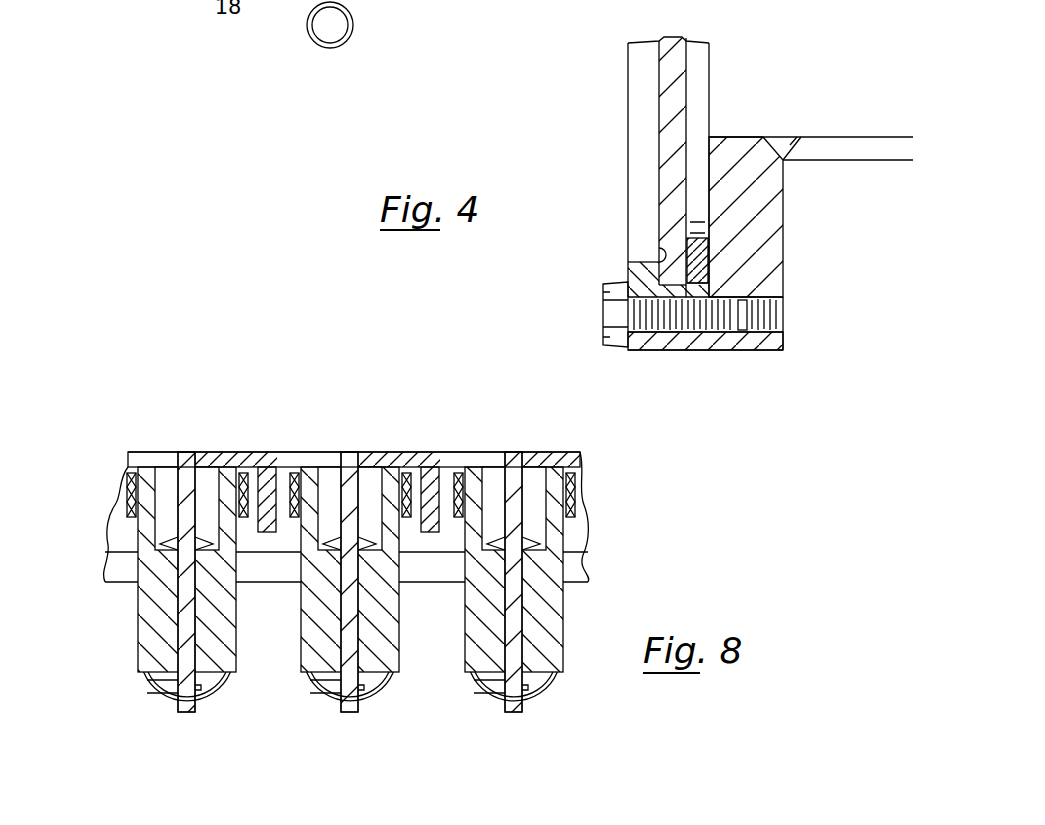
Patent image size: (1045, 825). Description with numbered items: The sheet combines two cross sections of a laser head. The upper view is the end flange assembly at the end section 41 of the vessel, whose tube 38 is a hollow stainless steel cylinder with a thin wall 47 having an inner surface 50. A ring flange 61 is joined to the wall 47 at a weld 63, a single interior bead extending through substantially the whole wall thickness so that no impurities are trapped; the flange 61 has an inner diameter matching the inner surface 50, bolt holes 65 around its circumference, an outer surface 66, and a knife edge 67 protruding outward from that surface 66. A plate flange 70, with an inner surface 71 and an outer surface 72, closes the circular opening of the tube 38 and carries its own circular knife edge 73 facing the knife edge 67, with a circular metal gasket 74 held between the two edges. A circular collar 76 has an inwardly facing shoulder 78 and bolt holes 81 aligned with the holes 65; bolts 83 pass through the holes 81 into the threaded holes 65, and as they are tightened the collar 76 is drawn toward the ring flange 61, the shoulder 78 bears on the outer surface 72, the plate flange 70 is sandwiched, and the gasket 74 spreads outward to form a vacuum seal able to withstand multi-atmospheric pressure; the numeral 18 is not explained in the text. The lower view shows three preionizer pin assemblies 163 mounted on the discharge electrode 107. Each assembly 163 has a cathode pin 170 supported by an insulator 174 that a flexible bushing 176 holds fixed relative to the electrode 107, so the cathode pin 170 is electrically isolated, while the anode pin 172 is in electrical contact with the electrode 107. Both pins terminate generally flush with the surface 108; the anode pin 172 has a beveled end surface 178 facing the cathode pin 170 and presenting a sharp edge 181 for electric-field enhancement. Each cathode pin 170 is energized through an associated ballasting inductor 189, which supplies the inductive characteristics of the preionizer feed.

In FIG. 4, the tube 18 is at (668, 21).
In FIG. 4, the tube 38 is at (927, 170).
In FIG. 4, the end section 41 is at (818, 298).
In FIG. 4, the wall 47 is at (878, 150).
In FIG. 4, the inner surface 50 is at (855, 137).
In FIG. 4, the ring flange 61 is at (763, 240).
In FIG. 4, the weld 63 is at (782, 137).
In FIG. 4, the bolt holes 65 is at (728, 333).
In FIG. 4, the outer surface 66 is at (708, 153).
In FIG. 4, the knife edge 67 is at (707, 277).
In FIG. 4, the plate flange 70 is at (670, 175).
In FIG. 4, the inner surface 71 is at (687, 93).
In FIG. 4, the outer surface 72 is at (660, 95).
In FIG. 4, the knife edge 73 is at (681, 333).
In FIG. 4, the metal gasket 74 is at (662, 250).
In FIG. 4, the collar 76 is at (637, 271).
In FIG. 4, the shoulder 78 is at (692, 242).
In FIG. 4, the bolt holes 81 is at (655, 340).
In FIG. 4, the bolts 83 is at (613, 345).
In FIG. 8, the discharge electrode 107 is at (325, 458).
In FIG. 8, the surface 108 is at (450, 451).
In FIG. 8, the pin assemblies 163 is at (217, 432).
In FIG. 8, the cathode pin 170 is at (185, 482).
In FIG. 8, the anode pin 172 is at (236, 458).
In FIG. 8, the insulator 174 is at (157, 624).
In FIG. 8, the flexible bushing 176 is at (132, 494).
In FIG. 8, the end surface 178 is at (207, 468).
In FIG. 8, the sharp edge 181 is at (198, 452).
In FIG. 8, the ballasting inductor 189 is at (230, 700).